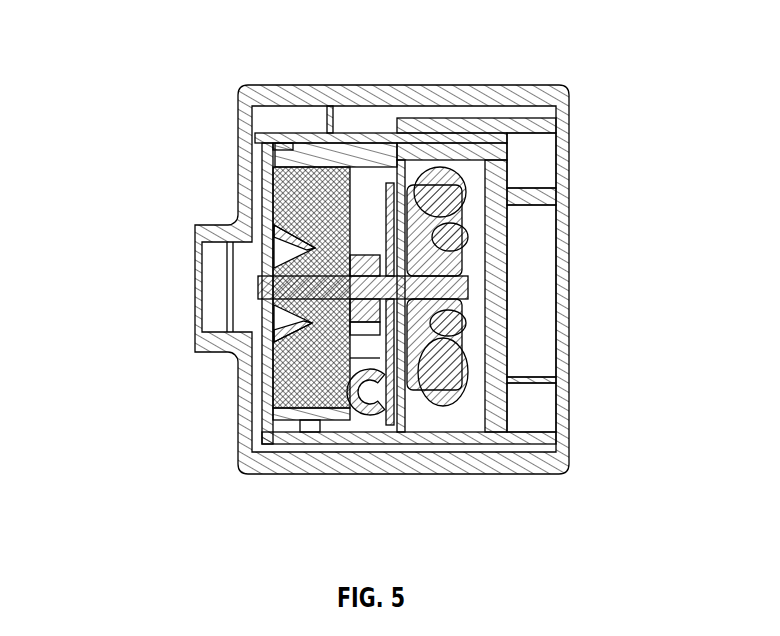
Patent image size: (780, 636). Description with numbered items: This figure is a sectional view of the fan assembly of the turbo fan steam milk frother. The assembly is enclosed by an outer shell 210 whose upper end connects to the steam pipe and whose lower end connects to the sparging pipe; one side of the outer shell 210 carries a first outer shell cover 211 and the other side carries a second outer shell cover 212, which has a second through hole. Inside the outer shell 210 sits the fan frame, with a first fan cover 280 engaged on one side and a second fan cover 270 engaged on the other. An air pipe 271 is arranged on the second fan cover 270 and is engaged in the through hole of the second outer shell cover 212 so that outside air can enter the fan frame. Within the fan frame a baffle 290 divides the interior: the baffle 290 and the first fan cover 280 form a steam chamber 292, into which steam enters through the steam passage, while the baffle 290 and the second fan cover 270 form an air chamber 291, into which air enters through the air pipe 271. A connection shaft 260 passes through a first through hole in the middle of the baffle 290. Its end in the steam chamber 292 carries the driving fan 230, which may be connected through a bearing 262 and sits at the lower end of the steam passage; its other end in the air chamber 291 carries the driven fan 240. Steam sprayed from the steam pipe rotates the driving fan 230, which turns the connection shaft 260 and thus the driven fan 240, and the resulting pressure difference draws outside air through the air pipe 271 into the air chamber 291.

The outer shell 210 is at (396, 247).
The first outer shell cover 211 is at (562, 333).
The second outer shell cover 212 is at (247, 120).
The driving fan 230 is at (507, 210).
The driven fan 240 is at (273, 377).
The connection shaft 260 is at (462, 320).
The bearing 262 is at (380, 255).
The second fan cover 270 is at (129, 255).
The air pipe 271 is at (243, 222).
The first fan cover 280 is at (500, 275).
The baffle 290 is at (401, 437).
The air chamber 291 is at (352, 178).
The steam chamber 292 is at (472, 170).